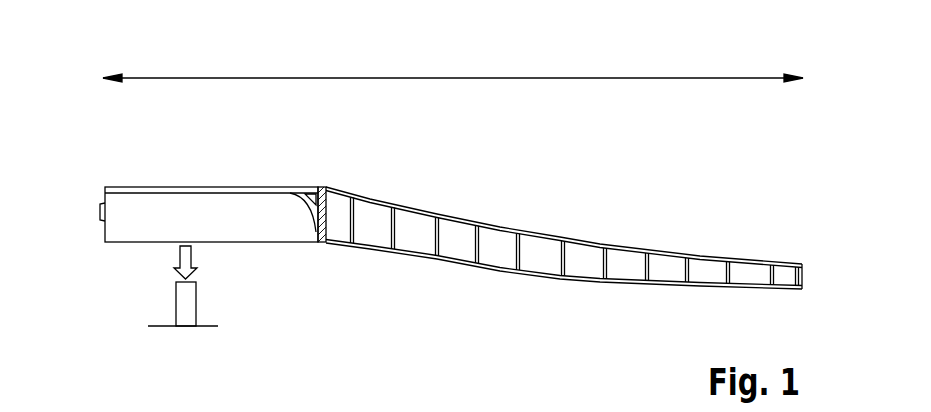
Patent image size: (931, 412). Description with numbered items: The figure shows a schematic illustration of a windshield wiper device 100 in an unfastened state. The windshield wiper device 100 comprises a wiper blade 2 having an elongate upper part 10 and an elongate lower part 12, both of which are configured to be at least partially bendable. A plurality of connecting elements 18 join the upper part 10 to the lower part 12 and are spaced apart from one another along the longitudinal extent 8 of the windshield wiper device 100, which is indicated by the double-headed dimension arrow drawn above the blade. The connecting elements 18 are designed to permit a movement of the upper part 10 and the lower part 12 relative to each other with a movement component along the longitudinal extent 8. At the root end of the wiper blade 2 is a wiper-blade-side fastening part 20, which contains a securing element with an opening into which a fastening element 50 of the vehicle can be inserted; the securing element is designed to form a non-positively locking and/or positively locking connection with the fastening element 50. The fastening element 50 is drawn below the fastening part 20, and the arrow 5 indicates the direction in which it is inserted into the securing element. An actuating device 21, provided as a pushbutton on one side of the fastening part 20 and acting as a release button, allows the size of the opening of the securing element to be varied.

The windshield wiper device 100 is at (147, 26).
The longitudinal extent 8 is at (468, 78).
The wiper-blade-side fastening part 20 is at (177, 168).
The actuating device 21 is at (100, 212).
The wiper blade 2 is at (560, 233).
The upper part 10 is at (578, 246).
The lower part 12 is at (511, 273).
The connecting elements 18 is at (688, 262).
The arrow 5 is at (191, 262).
The fastening element 50 is at (152, 303).